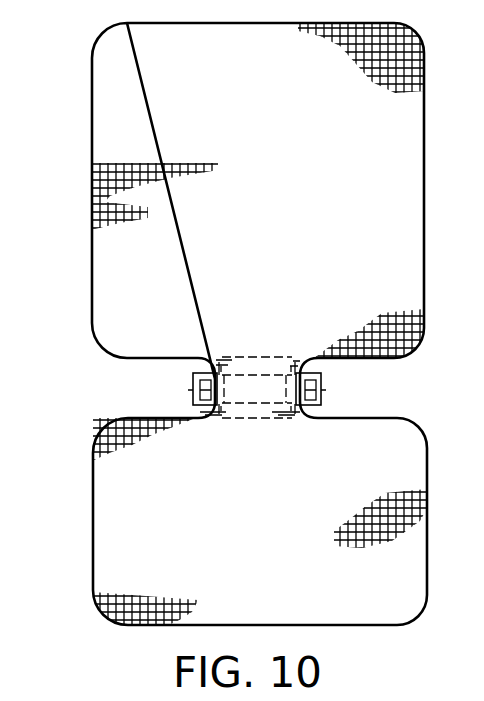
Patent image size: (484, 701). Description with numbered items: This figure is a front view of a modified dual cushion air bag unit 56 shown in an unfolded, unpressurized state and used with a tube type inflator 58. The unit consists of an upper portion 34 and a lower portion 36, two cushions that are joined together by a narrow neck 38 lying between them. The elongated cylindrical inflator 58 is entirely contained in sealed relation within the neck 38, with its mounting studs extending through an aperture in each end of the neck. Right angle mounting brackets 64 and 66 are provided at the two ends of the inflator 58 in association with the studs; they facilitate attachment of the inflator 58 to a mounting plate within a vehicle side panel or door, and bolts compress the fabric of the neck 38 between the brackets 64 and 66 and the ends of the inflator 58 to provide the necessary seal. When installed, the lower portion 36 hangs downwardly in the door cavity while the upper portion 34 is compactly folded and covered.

The upper portion 34 is at (92, 150).
The lower portion 36 is at (100, 550).
The neck portion 38 is at (218, 407).
The dual cushion air bag unit 56 is at (92, 412).
The tube type inflator 58 is at (243, 385).
The right angle mounting bracket 64 is at (193, 390).
The right angle mounting bracket 66 is at (322, 391).